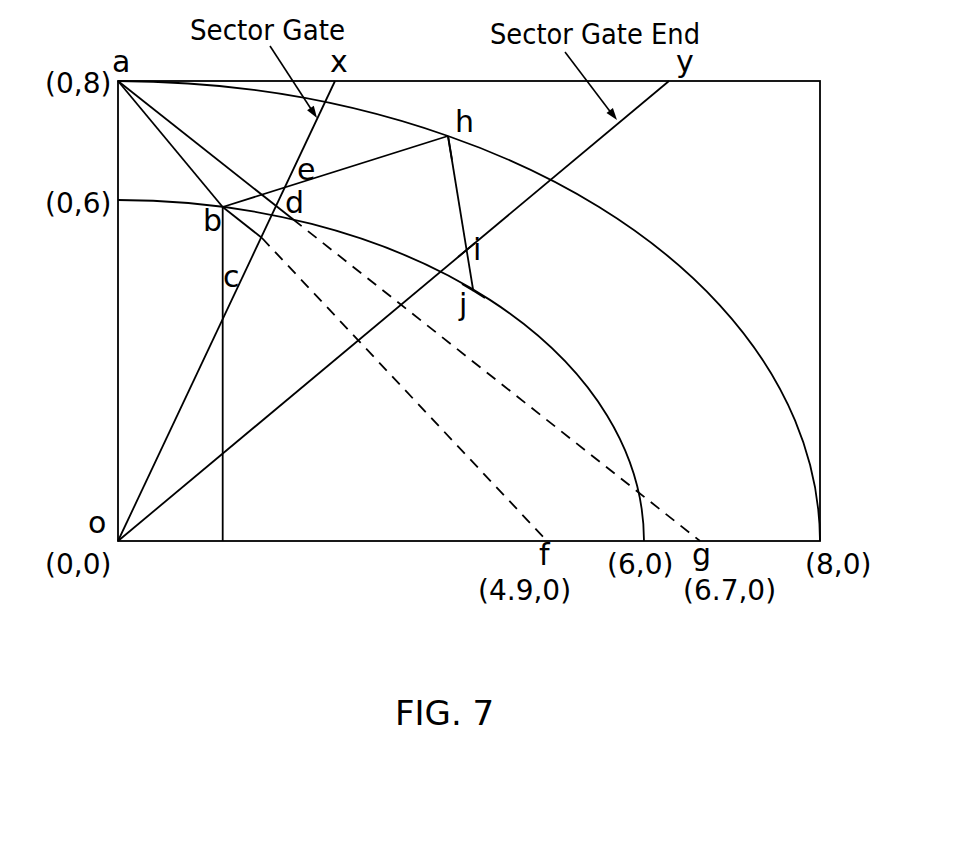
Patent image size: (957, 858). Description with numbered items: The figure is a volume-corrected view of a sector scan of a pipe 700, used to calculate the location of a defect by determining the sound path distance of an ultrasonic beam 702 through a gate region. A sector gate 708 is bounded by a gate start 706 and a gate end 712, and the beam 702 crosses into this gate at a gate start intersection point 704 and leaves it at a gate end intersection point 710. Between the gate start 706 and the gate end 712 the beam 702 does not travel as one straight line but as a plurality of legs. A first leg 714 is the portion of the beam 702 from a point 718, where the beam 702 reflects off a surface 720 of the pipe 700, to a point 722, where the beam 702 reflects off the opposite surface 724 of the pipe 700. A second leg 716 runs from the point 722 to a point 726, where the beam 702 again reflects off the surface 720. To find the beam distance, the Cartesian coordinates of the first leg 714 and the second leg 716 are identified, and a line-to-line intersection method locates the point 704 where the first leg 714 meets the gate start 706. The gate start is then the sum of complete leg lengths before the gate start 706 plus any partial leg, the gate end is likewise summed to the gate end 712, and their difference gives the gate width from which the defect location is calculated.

The pipe 700 is at (768, 472).
The beam 702 is at (152, 122).
The gate start intersection point 704 is at (285, 186).
The start of sector gate 706 is at (222, 322).
The sector gate 708 is at (198, 433).
The gate end intersection point 710 is at (467, 250).
The end of sector gate 712 is at (573, 160).
The first leg 714 is at (410, 133).
The second leg 716 is at (455, 175).
The reflection point 718 is at (253, 253).
The surface of pipe 720 is at (551, 348).
The reflection point 722 is at (448, 136).
The surface of pipe 724 is at (672, 258).
The reflection point 726 is at (473, 291).